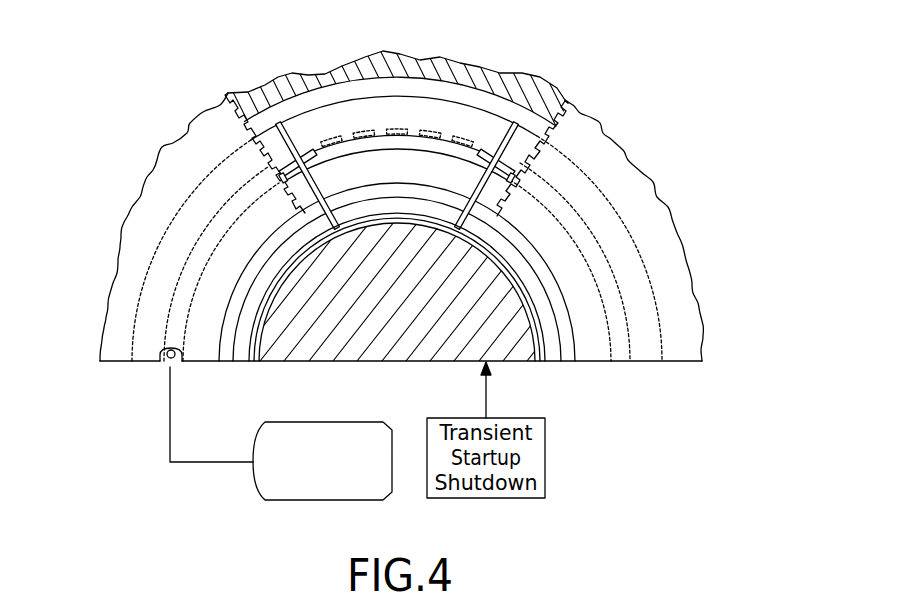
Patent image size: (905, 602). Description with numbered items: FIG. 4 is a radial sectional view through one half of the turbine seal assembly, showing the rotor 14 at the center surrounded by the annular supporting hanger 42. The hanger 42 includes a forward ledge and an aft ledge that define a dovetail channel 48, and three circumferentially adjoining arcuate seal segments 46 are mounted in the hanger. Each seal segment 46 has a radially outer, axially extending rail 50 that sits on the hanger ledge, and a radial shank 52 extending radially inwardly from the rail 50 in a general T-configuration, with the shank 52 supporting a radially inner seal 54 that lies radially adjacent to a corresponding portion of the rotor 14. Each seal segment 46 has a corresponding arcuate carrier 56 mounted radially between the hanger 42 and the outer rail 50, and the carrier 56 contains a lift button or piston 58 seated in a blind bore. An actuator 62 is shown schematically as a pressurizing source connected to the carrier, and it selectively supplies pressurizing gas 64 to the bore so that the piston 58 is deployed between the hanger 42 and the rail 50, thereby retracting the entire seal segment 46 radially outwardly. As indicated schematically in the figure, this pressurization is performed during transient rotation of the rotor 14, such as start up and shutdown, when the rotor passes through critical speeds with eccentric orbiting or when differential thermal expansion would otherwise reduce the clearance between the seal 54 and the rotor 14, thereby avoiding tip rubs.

The rotor 14 is at (447, 297).
The hanger 42 is at (527, 83).
The seal segment 46 is at (284, 114).
The dovetail channel 48 is at (303, 88).
The rail 50 is at (463, 100).
The radial shank 52 is at (397, 160).
The seal 54 is at (419, 212).
The carrier 56 is at (377, 134).
The piston 58 is at (428, 133).
The actuator 62 is at (322, 500).
The pressurizing gas 64 is at (170, 418).